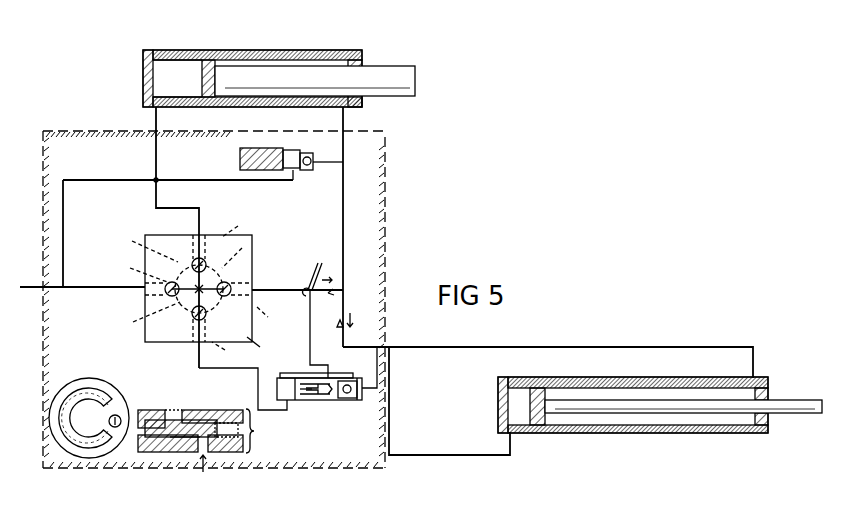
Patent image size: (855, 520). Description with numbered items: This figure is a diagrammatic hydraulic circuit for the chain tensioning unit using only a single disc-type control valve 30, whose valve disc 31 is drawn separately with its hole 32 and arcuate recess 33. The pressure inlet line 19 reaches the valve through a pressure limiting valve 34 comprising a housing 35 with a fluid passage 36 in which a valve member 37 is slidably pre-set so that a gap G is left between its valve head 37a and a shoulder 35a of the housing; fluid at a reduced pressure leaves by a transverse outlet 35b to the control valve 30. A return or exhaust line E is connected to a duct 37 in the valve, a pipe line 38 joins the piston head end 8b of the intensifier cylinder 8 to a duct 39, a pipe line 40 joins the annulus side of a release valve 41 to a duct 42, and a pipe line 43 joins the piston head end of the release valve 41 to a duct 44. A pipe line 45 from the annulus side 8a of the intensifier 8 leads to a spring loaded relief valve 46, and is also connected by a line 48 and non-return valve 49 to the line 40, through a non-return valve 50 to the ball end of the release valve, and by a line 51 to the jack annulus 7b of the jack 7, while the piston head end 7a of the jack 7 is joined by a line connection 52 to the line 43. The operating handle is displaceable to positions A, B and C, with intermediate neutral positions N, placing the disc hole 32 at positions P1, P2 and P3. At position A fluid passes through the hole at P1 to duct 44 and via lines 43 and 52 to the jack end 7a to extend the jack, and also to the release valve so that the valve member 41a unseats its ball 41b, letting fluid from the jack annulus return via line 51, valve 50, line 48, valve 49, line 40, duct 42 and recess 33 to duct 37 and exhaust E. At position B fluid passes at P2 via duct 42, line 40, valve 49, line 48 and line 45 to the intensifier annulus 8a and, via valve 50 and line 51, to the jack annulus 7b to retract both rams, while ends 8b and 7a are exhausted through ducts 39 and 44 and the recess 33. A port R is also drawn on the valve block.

The jack 7 is at (660, 421).
The piston head end of the jack 7a is at (523, 410).
The jack annulus 7b is at (647, 418).
The intensifier cylinder 8 is at (279, 61).
The annulus side of the intensifier 8a is at (330, 66).
The piston head end of the intensifier cylinder 8b is at (182, 63).
The pressure inlet line 19 is at (203, 473).
The control valve 30 is at (181, 294).
The valve disc 31 is at (83, 379).
The hole 32 is at (115, 415).
The arcuate recess 33 is at (93, 390).
The pressure limiting valve 34 is at (207, 417).
The housing 35 is at (223, 415).
The shoulder of the housing 35a is at (197, 417).
The transverse outlet 35b is at (182, 417).
The fluid passage 36 is at (167, 438).
The valve member 37 is at (217, 456).
The valve head 37a is at (185, 438).
The pipe line 38 is at (155, 167).
The duct 39 is at (240, 223).
The pipe line 40 is at (316, 271).
The release valve 41 is at (327, 391).
The valve member 41a is at (305, 391).
The ball 41b is at (347, 394).
The duct 42 is at (271, 318).
The pipe line 43 is at (256, 368).
The duct 44 is at (226, 352).
The pipe line 45 is at (346, 125).
The spring loaded relief valve 46 is at (296, 171).
The line 48 is at (328, 290).
The non-return valve 49 is at (329, 293).
The non-return valve 50 is at (343, 325).
The line 51 is at (360, 347).
The line connection 52 is at (430, 456).
The handle position A is at (191, 363).
The handle position B is at (276, 285).
The handle position C is at (192, 221).
The return or exhaust line E is at (74, 284).
The gap G is at (190, 410).
The neutral positions N is at (259, 294).
The return port R is at (176, 291).
The position P1 is at (205, 314).
The position P2 is at (234, 281).
The position P3 is at (215, 257).